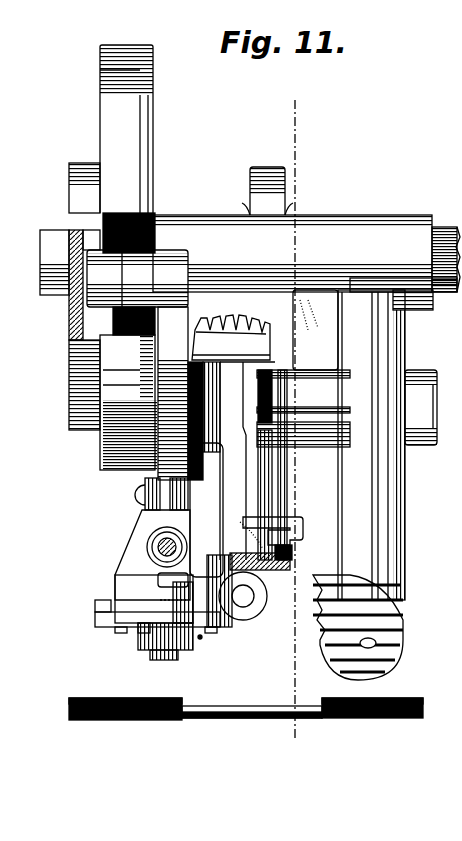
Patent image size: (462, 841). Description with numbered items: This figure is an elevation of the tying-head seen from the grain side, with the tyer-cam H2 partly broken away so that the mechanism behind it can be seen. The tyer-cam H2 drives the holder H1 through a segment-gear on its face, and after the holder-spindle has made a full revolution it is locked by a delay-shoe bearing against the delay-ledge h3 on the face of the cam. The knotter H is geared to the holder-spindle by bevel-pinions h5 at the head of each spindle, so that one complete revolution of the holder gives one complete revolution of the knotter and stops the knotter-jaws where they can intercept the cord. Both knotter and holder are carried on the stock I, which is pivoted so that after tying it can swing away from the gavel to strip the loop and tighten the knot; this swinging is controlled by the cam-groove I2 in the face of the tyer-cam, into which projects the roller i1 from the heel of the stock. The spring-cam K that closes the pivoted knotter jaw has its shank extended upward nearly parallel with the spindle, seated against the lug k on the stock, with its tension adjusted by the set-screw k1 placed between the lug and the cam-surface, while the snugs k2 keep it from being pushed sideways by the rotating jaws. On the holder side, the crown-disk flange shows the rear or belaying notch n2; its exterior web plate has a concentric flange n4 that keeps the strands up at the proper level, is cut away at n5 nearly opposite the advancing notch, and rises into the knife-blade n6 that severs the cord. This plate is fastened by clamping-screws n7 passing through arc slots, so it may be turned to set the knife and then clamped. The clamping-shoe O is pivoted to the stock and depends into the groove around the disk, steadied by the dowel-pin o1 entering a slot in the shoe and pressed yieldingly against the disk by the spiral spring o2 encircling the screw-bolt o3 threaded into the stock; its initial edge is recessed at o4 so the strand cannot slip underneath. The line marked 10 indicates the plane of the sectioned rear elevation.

The section line 10 is at (343, 100).
The tyer-cam H2 is at (113, 257).
The delay-ledge h3 is at (148, 102).
The cam-groove I2 is at (85, 287).
The roller i1 is at (137, 278).
The bevel-pinion h5 is at (262, 336).
The spring-cam K is at (285, 492).
The lug k is at (294, 372).
The set-screw k1 is at (300, 396).
The snugs k2 is at (298, 530).
The stock I is at (385, 479).
The clamping-shoe O is at (169, 521).
The dowel-pin o1 is at (170, 580).
The spiral spring o2 is at (147, 547).
The screw-bolt o3 is at (176, 548).
The recess o4 is at (201, 641).
The holder H1 is at (157, 625).
The knotter H is at (240, 594).
The rear or belaying notch n2 is at (212, 580).
The concentric flange n4 is at (96, 616).
The cut-away portion n5 is at (146, 628).
The knife-blade n6 is at (163, 612).
The clamping-screws n7 is at (228, 641).